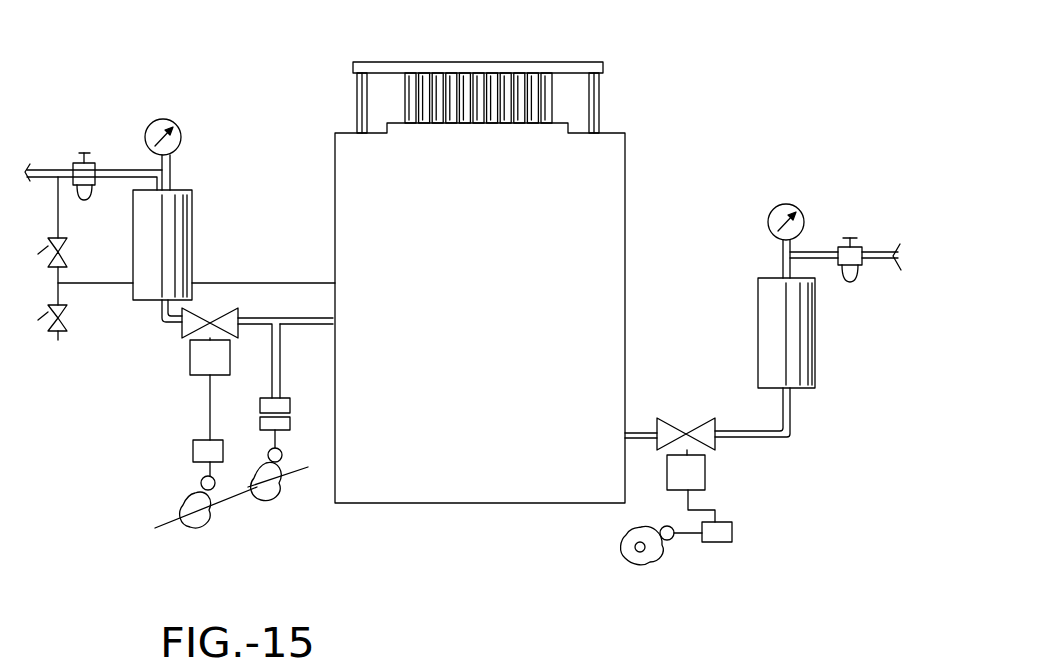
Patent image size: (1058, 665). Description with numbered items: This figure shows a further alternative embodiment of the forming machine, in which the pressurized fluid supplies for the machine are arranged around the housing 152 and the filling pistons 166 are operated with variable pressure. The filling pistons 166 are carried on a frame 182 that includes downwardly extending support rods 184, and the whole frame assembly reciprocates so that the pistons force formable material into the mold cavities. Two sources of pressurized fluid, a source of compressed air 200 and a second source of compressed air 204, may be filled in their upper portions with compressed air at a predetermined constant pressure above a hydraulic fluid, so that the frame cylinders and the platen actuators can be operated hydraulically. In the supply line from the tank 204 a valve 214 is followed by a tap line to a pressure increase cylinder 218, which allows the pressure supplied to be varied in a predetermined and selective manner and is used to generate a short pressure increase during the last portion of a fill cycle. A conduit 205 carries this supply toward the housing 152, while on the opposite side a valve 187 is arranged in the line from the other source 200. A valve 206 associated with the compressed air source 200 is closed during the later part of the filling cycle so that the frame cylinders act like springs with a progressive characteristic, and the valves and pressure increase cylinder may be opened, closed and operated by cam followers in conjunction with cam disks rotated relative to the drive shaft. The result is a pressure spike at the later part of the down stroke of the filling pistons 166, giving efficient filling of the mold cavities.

The housing 152 is at (485, 514).
The filling pistons 166 is at (465, 80).
The frame 182 is at (587, 62).
The support rods 184 is at (357, 100).
The source of compressed air 200 is at (30, 167).
The source of compressed air 204 is at (192, 213).
The valve 214 is at (218, 310).
The conduit 205 is at (312, 321).
The pressure increase cylinder 218 is at (260, 404).
The valve 187 is at (640, 432).
The valve 206 is at (710, 445).